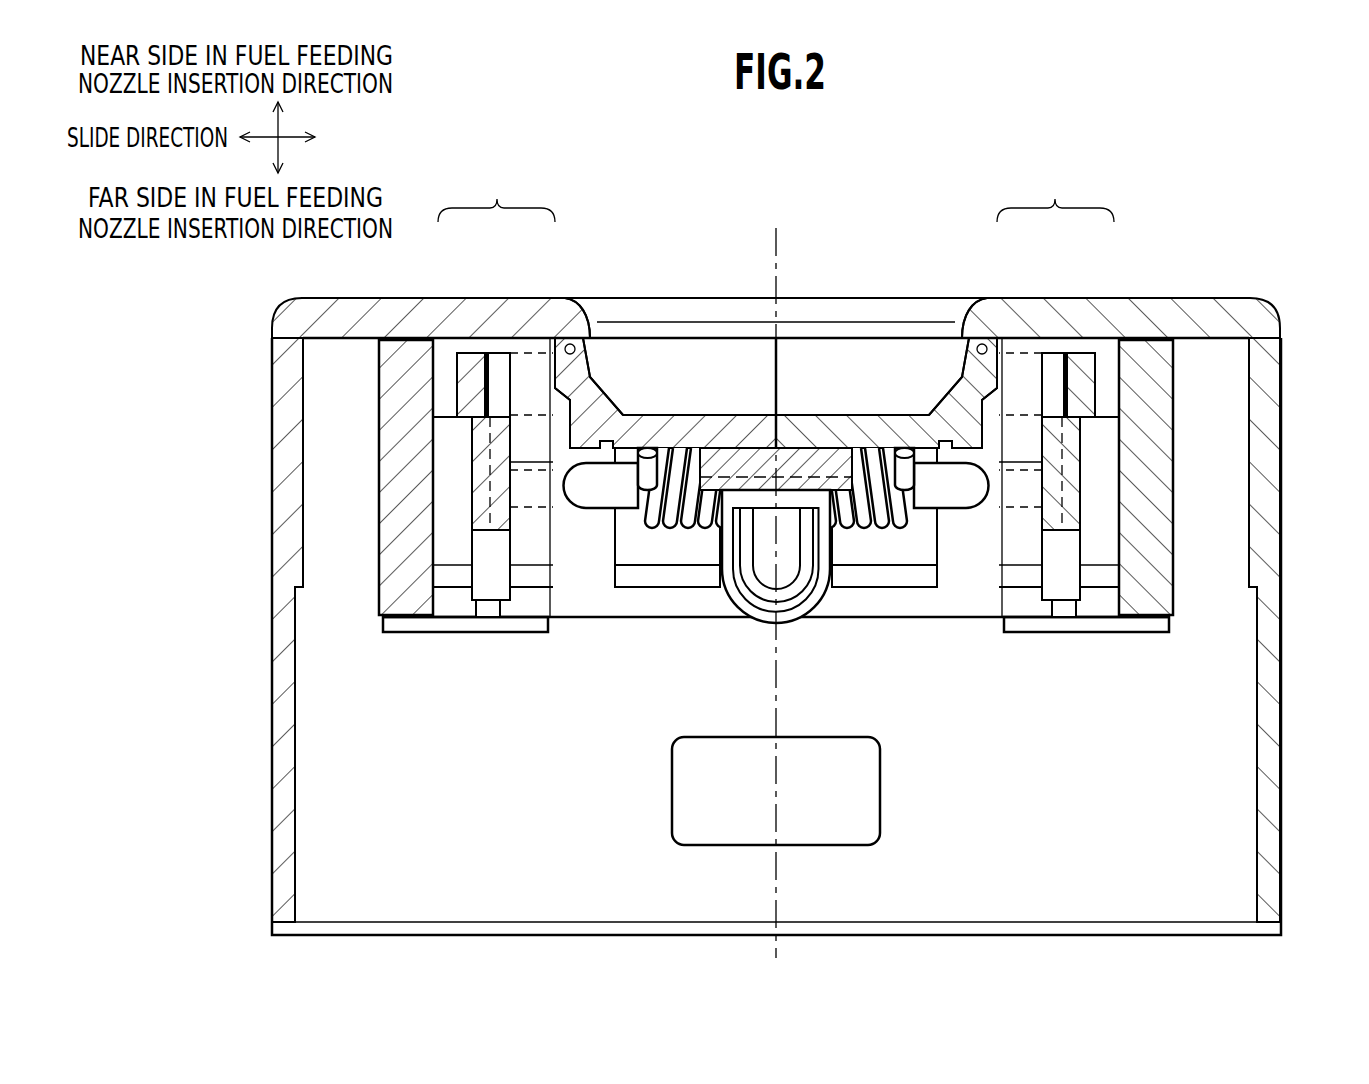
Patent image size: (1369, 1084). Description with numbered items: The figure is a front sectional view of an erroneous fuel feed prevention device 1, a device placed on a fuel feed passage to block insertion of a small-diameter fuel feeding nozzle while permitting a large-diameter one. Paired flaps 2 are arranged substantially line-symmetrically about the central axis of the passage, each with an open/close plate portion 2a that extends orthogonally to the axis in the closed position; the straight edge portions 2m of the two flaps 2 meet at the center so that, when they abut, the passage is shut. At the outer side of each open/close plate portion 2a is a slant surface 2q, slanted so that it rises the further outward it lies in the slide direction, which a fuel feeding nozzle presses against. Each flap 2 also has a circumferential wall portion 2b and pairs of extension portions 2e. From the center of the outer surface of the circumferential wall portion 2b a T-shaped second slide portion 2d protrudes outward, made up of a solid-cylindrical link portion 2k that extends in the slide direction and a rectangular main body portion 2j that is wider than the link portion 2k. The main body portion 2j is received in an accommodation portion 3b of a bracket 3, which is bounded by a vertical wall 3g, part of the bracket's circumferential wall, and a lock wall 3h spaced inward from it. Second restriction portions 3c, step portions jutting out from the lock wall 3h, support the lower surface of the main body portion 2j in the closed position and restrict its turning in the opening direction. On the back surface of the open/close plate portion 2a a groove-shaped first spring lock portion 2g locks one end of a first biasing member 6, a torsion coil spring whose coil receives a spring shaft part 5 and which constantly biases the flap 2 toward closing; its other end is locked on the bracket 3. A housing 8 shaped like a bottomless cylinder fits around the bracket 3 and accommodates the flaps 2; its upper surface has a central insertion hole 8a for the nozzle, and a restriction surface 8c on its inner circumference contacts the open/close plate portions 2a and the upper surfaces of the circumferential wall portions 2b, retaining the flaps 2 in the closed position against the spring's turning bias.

The erroneous fuel feed prevention device 1 is at (1246, 177).
The flap 2 is at (735, 413).
The open/close plate portion 2a is at (761, 430).
The circumferential wall portion 2b is at (584, 398).
The second slide portion 2d is at (776, 195).
The extension portion 2e is at (706, 424).
The first spring lock portion 2g is at (647, 447).
The main body portion 2j is at (473, 370).
The link portion 2k is at (520, 355).
The straight edge portion 2m is at (797, 346).
The slant surface 2q is at (627, 412).
The bracket 3 is at (1186, 370).
The accommodation portion 3b is at (445, 355).
The second restriction portion 3c is at (478, 497).
The vertical wall 3g is at (405, 497).
The lock wall 3h is at (497, 375).
The spring shaft part 5 is at (953, 490).
The first biasing member 6 is at (816, 600).
The housing 8 is at (687, 296).
The insertion hole 8a is at (586, 297).
The restriction surface 8c is at (572, 344).